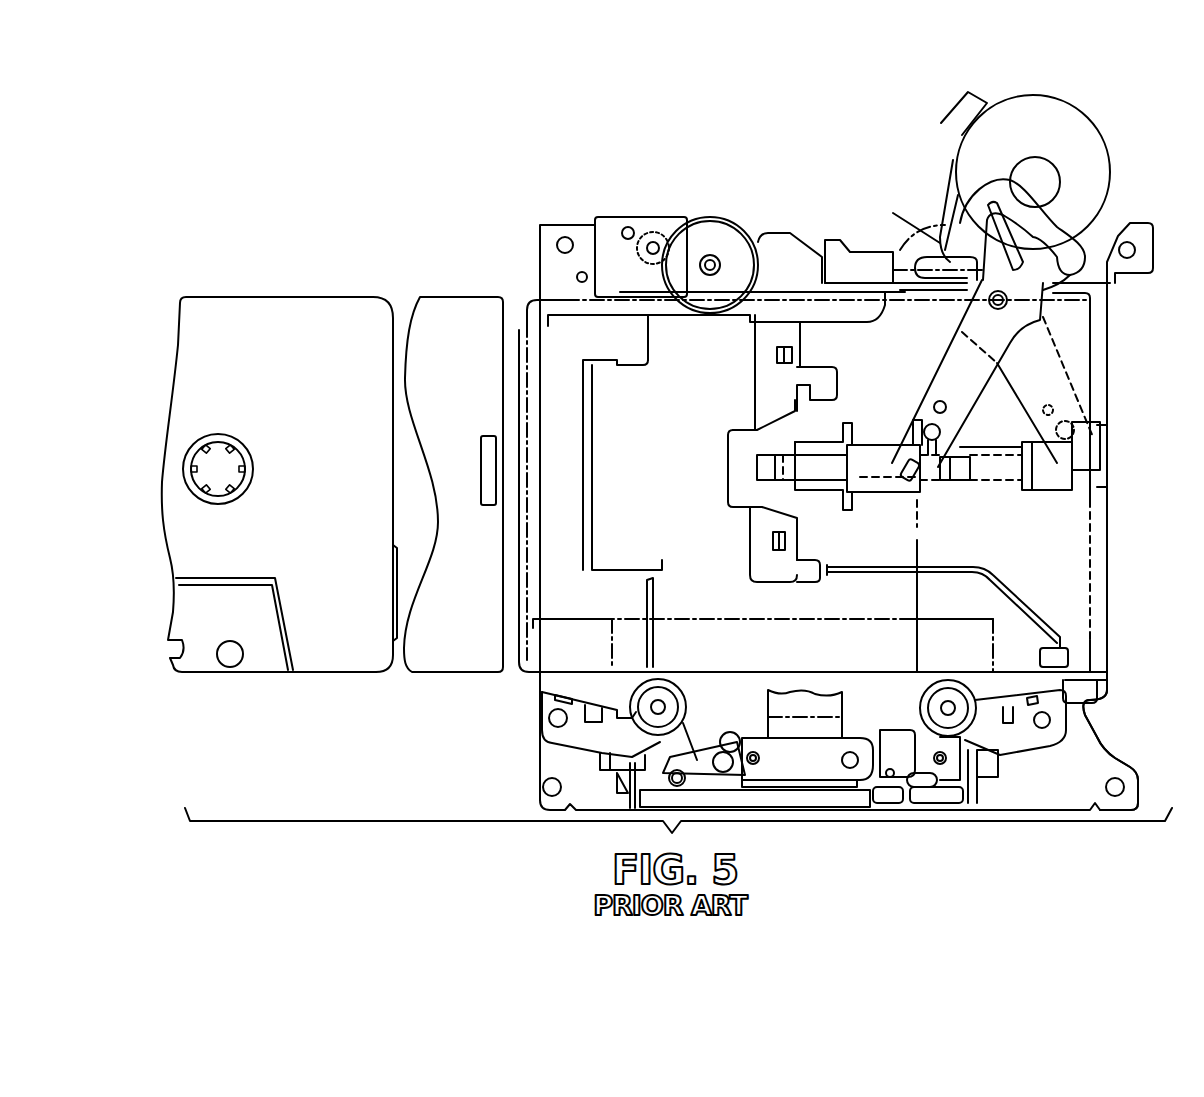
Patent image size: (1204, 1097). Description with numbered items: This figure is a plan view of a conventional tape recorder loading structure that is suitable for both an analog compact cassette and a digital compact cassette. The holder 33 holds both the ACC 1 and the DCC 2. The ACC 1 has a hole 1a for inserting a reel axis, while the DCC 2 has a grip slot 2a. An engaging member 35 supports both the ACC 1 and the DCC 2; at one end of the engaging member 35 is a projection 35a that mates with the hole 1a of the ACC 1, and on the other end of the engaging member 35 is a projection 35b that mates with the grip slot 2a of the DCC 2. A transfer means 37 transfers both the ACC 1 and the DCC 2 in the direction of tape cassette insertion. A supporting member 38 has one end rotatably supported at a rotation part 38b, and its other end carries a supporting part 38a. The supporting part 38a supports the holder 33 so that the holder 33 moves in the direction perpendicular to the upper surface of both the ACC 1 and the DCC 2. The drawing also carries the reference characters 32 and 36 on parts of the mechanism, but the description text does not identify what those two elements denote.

The ACC 1 is at (347, 315).
The hole 1a is at (216, 434).
The DCC 2 is at (452, 313).
The grip slot 2a is at (485, 507).
The cartridge holder outline 32 is at (522, 672).
The holder 33 is at (578, 392).
The engaging member 35 is at (870, 455).
The projection 35a is at (760, 465).
The projection 35b is at (905, 488).
The stopper 36 is at (1100, 430).
The transfer means 37 is at (957, 327).
The supporting member 38 is at (872, 306).
The supporting part 38a is at (818, 377).
The rotation part 38b is at (1130, 238).